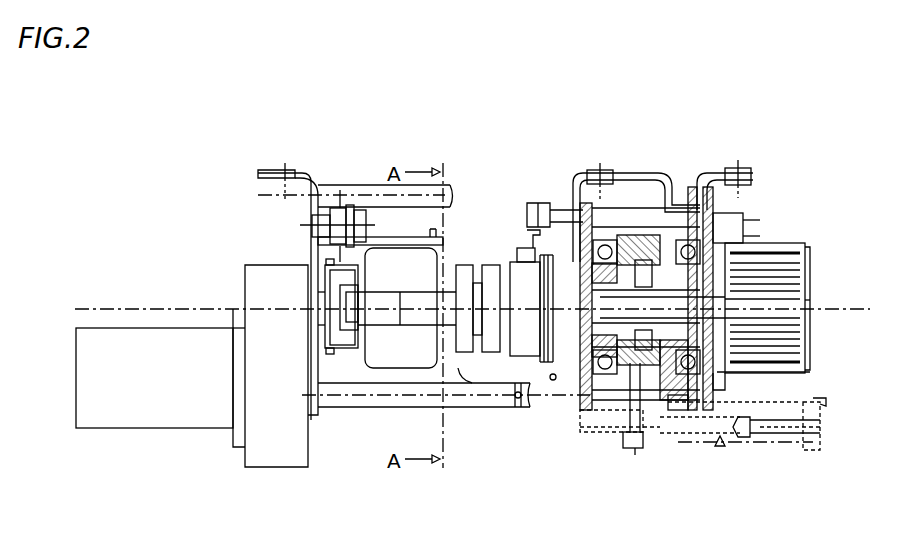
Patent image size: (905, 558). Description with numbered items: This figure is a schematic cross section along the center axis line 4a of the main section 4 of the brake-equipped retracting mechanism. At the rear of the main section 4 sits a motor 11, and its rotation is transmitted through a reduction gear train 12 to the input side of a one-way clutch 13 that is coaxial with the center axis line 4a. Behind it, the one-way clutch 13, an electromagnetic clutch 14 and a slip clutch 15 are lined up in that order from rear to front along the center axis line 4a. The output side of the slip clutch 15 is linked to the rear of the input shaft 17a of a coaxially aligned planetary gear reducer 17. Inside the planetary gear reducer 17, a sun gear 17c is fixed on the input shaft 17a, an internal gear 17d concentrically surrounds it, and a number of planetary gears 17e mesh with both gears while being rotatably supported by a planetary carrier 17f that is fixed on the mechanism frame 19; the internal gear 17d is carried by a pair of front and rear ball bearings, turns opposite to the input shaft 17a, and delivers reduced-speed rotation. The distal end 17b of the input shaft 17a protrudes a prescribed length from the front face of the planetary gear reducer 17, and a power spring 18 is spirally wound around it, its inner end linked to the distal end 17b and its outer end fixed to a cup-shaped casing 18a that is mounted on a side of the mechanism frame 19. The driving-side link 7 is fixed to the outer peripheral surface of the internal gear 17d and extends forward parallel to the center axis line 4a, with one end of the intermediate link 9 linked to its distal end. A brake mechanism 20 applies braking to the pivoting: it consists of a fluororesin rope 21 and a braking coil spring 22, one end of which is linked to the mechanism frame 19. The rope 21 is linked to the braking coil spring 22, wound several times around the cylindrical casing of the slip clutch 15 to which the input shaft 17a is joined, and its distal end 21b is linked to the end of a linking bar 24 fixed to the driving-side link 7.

The main section 4 is at (420, 122).
The center axis line 4a is at (152, 309).
The driving-side link 7 is at (720, 448).
The intermediate link 9 is at (830, 399).
The motor 11 is at (172, 410).
The reduction gear train 12 is at (275, 447).
The one-way clutch 13 is at (342, 373).
The electromagnetic clutch 14 is at (400, 370).
The slip clutch 15 is at (497, 375).
The planetary gear reducer 17 is at (597, 403).
The input shaft 17a is at (713, 303).
The distal end 17b is at (777, 298).
The sun gear 17c is at (650, 237).
The internal gear 17d is at (660, 380).
The planetary gears 17e is at (677, 378).
The planetary carrier 17f is at (680, 255).
The power spring 18 is at (763, 352).
The cup-shaped casing 18a is at (810, 337).
The mechanism frame 19 is at (722, 211).
The brake mechanism 20 is at (525, 130).
The rope 21 is at (540, 288).
The distal end 21b is at (543, 372).
The braking coil spring 22 is at (520, 248).
The linking bar 24 is at (550, 400).